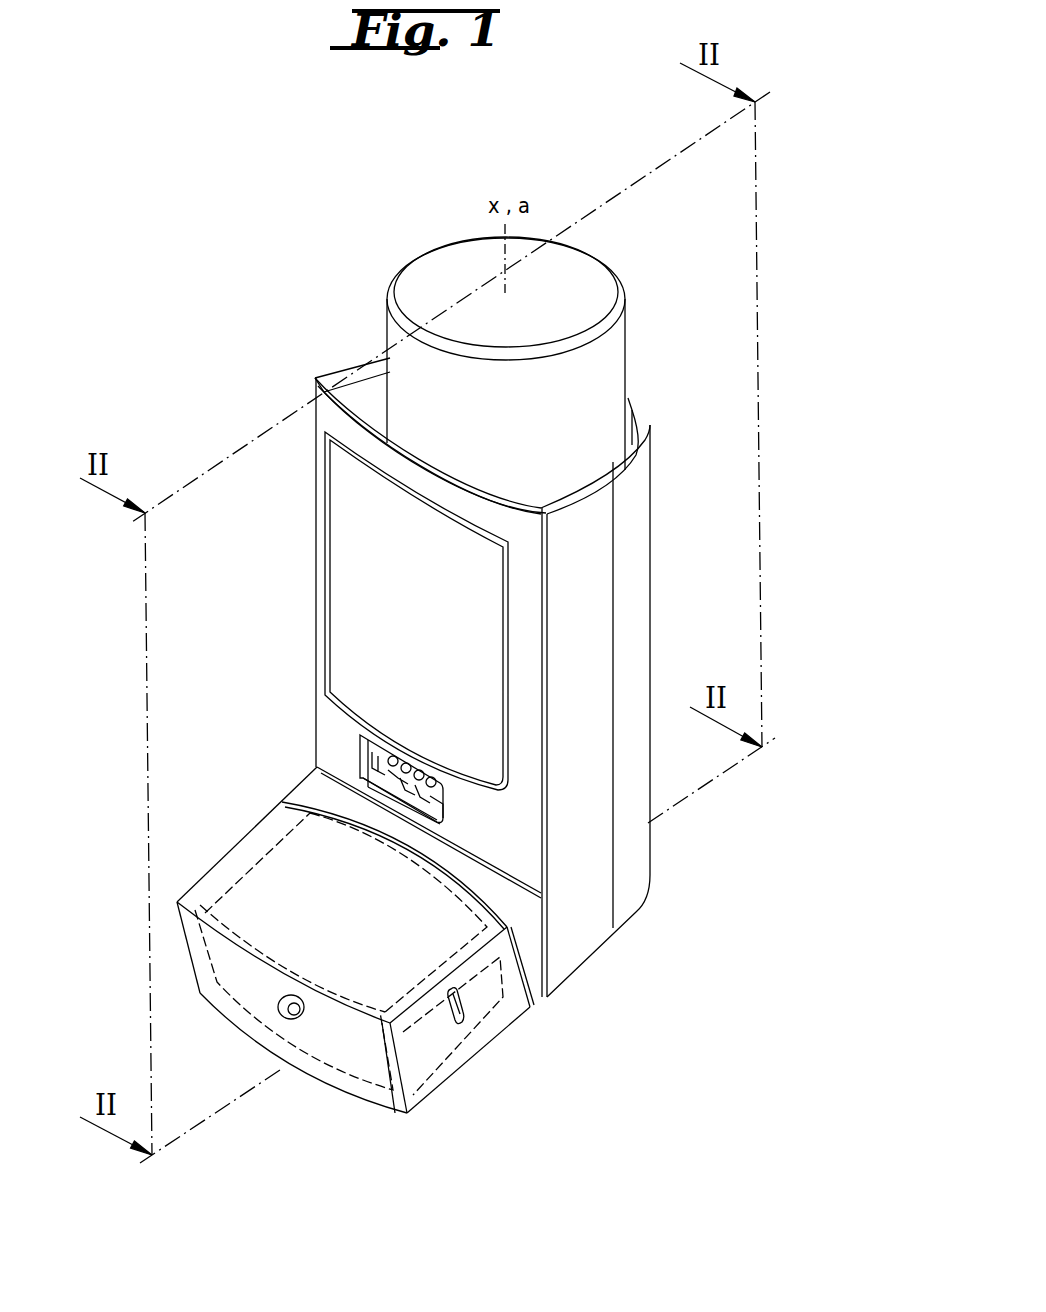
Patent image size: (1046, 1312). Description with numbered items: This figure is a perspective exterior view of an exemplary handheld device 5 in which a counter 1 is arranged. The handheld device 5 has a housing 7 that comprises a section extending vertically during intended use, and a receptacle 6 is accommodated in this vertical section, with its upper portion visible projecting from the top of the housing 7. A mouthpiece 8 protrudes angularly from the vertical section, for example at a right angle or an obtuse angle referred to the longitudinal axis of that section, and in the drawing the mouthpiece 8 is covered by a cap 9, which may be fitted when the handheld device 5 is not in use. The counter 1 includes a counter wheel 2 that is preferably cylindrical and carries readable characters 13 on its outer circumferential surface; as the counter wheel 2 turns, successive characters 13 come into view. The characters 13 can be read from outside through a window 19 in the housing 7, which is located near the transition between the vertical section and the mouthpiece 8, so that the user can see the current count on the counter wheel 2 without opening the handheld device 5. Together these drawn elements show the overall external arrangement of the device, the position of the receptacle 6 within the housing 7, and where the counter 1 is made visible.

The counter 1 is at (383, 755).
The counter wheel 2 is at (400, 767).
The handheld device 5 is at (720, 442).
The receptacle 6 is at (612, 355).
The housing 7 is at (628, 622).
The mouthpiece 8 is at (240, 862).
The cap 9 is at (227, 1008).
The characters 13 is at (443, 776).
The window 19 is at (443, 800).